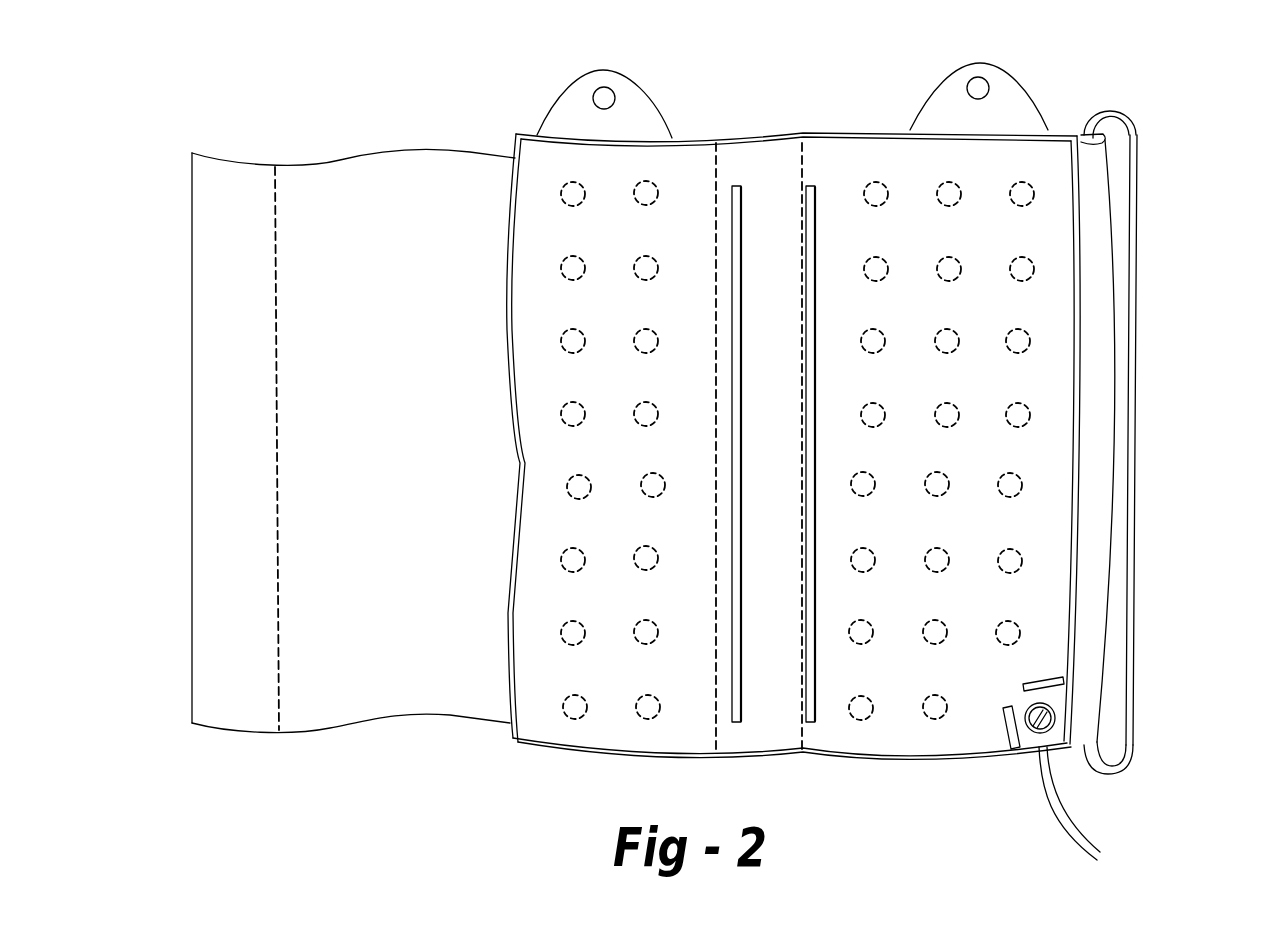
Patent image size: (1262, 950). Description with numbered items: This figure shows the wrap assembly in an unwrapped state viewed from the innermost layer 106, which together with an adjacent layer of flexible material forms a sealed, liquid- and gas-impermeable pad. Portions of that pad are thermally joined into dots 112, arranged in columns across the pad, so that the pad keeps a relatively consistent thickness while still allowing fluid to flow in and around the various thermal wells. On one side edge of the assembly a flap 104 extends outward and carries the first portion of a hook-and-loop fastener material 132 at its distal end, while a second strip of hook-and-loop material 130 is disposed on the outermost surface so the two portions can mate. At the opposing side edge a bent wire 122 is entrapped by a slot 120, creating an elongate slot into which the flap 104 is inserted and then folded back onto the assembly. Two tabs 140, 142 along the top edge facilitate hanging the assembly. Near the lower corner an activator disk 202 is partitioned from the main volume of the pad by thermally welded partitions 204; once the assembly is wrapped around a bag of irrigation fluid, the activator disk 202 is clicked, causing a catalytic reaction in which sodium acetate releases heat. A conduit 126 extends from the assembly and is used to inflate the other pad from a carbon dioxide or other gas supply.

The flap 104 is at (368, 173).
The hook-and-loop fastener material 132 is at (213, 165).
The layer 106 is at (823, 743).
The hook-and-loop material 130 is at (782, 170).
The tab 142 is at (627, 88).
The tab 140 is at (933, 97).
The dots 112 is at (950, 338).
The slot 120 is at (1105, 211).
The bent wire 122 is at (1123, 115).
The activator disk 202 is at (1052, 710).
The thermally welded partitions 204 is at (1056, 680).
The conduit 126 is at (1070, 837).